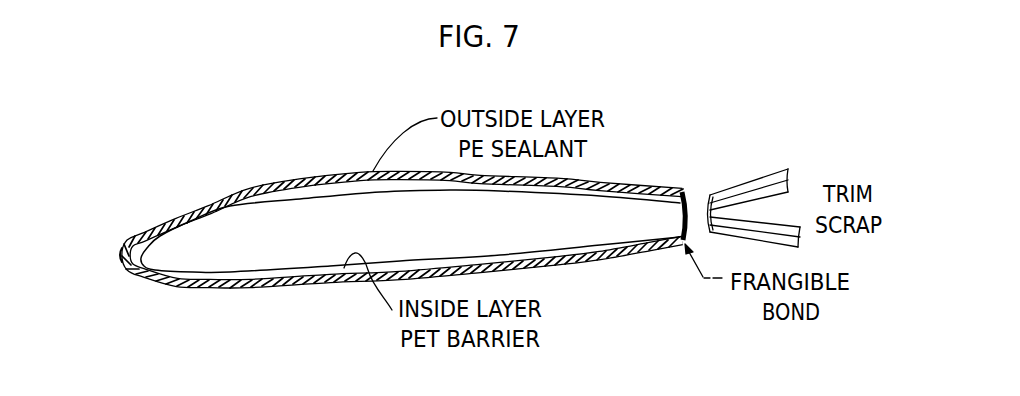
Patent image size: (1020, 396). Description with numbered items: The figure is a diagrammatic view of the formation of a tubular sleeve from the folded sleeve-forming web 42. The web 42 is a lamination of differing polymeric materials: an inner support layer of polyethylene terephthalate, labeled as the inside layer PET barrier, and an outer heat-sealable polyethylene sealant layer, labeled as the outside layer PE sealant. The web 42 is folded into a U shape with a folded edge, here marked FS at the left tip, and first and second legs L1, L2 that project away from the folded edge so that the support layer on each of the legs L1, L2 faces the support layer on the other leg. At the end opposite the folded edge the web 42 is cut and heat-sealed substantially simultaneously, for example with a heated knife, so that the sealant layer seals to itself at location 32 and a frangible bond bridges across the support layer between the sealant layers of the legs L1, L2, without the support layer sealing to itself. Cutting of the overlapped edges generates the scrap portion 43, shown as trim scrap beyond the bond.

The folded sleeve-forming web 42 is at (262, 187).
The frangible bond seal 32 is at (685, 193).
The scrap portion 43 is at (770, 175).
The first leg L1 is at (625, 184).
The second leg L2 is at (587, 267).
The fold seal at pouch tip FS is at (122, 258).